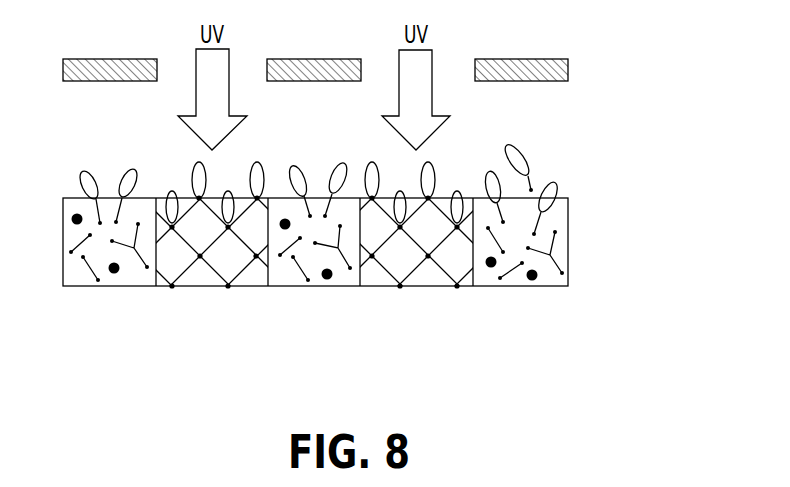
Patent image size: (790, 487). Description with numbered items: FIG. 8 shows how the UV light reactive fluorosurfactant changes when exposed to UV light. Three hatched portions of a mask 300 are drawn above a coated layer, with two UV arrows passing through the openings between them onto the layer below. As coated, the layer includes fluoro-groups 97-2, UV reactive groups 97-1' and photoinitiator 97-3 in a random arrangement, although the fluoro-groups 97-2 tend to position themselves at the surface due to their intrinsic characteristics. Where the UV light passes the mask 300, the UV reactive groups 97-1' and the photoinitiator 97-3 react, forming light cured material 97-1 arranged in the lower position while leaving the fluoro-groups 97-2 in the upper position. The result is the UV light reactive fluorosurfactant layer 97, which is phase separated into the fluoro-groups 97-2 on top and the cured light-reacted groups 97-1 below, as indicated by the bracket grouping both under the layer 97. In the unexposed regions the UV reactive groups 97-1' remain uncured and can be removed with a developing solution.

The mask 300 is at (568, 69).
The UV light reactive fluorosurfactant layer 97 is at (644, 338).
The cured material layer 97-1 is at (315, 242).
The UV reactive group 97-1' is at (352, 247).
The fluoro-group 97-2 is at (557, 187).
The photoinitiator 97-3 is at (532, 280).